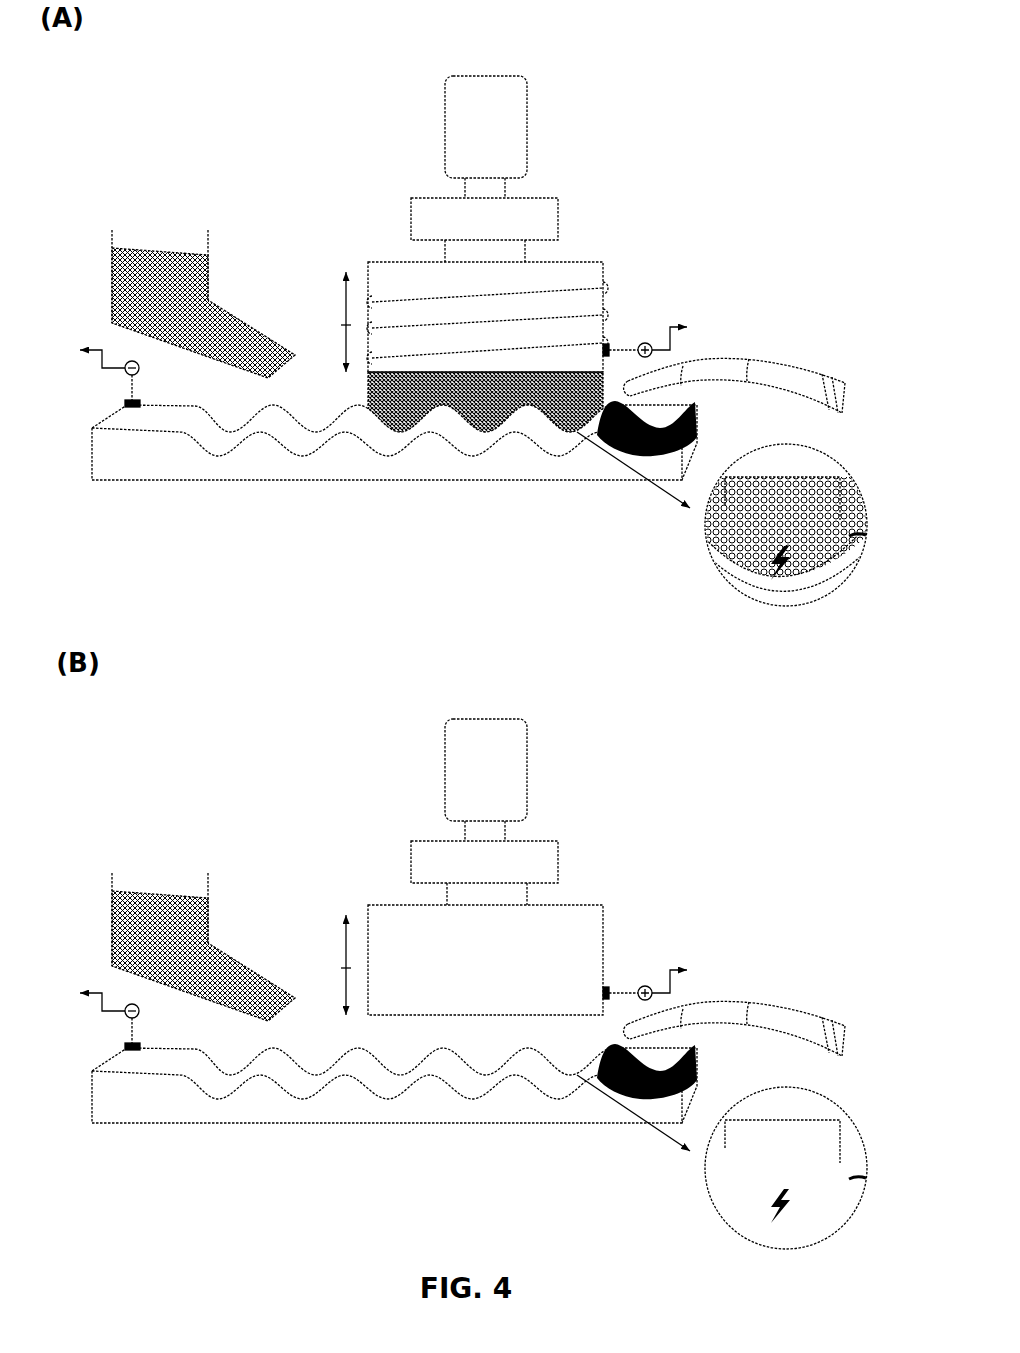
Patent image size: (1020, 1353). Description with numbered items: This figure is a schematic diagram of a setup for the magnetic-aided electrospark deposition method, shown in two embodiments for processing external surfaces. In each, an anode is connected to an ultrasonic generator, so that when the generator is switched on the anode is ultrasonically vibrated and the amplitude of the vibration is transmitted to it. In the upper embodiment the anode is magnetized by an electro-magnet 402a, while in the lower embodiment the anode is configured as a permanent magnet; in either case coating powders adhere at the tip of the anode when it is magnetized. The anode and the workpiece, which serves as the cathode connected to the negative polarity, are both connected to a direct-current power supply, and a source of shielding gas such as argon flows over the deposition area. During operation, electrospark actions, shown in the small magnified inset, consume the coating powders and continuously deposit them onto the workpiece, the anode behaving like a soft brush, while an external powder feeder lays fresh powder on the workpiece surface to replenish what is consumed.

The electro-magnet 402a is at (562, 288).